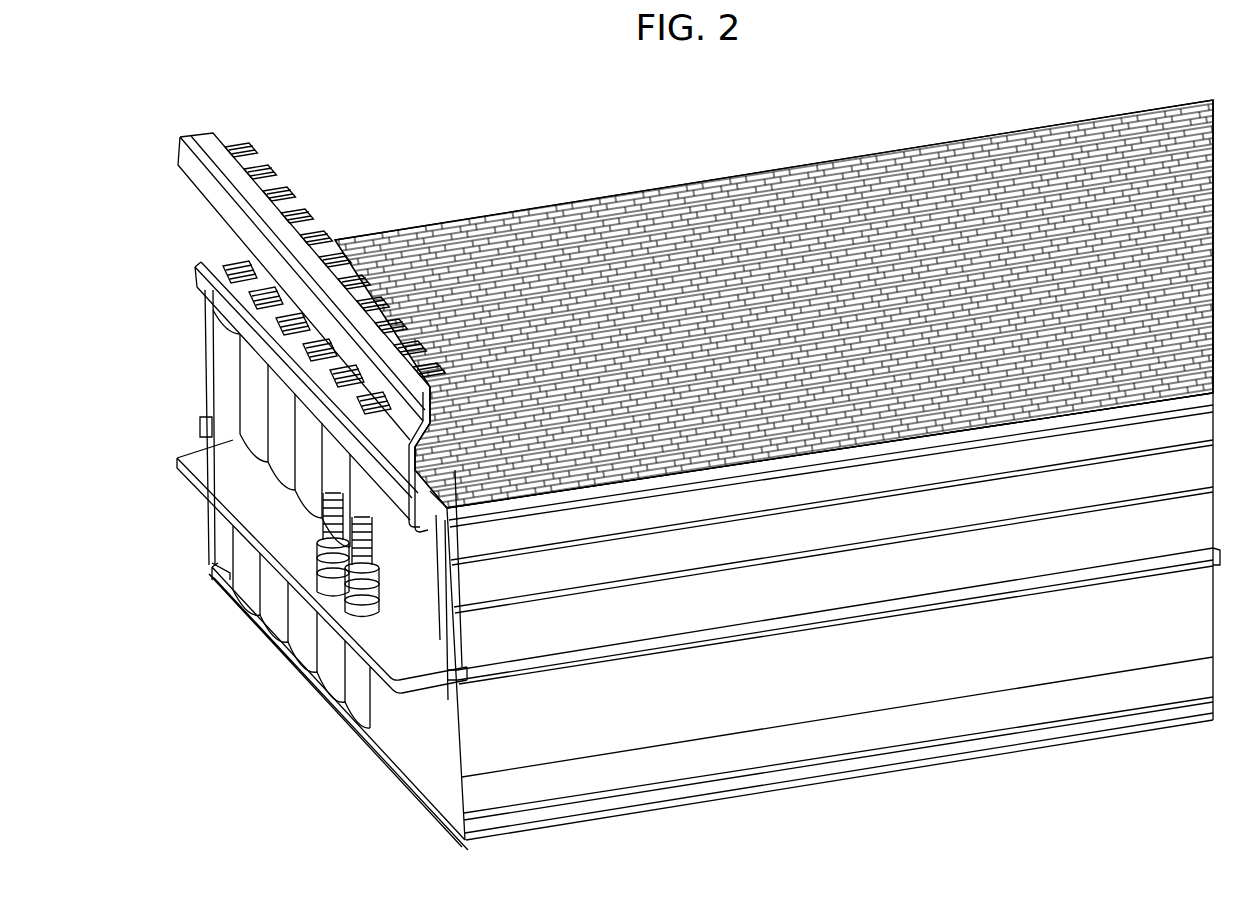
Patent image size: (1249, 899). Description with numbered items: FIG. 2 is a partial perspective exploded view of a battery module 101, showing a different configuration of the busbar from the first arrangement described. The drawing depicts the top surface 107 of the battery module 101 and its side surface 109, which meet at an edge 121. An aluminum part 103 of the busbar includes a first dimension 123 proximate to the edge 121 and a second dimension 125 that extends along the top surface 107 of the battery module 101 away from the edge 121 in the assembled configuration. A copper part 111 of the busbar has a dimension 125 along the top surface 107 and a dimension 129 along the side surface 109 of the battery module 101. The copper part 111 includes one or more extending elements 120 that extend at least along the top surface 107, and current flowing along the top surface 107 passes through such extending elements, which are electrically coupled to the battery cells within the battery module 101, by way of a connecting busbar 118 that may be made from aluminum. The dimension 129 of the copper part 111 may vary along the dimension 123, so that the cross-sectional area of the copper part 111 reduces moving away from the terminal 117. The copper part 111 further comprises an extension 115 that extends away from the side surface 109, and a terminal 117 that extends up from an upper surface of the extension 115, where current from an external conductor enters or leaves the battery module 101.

The battery module 101 is at (825, 470).
The aluminum part 103 is at (253, 177).
The top surface 107 is at (555, 228).
The side surface 109 is at (215, 570).
The copper part 111 is at (323, 330).
The extension 115 is at (393, 523).
The terminal 117 is at (355, 487).
The connecting busbar 118 is at (212, 260).
The extending elements 120 is at (213, 137).
The edge 121 is at (200, 262).
The first dimension 123 is at (186, 322).
The second dimension 125 is at (340, 202).
The dimension along the side surface 129 is at (385, 811).